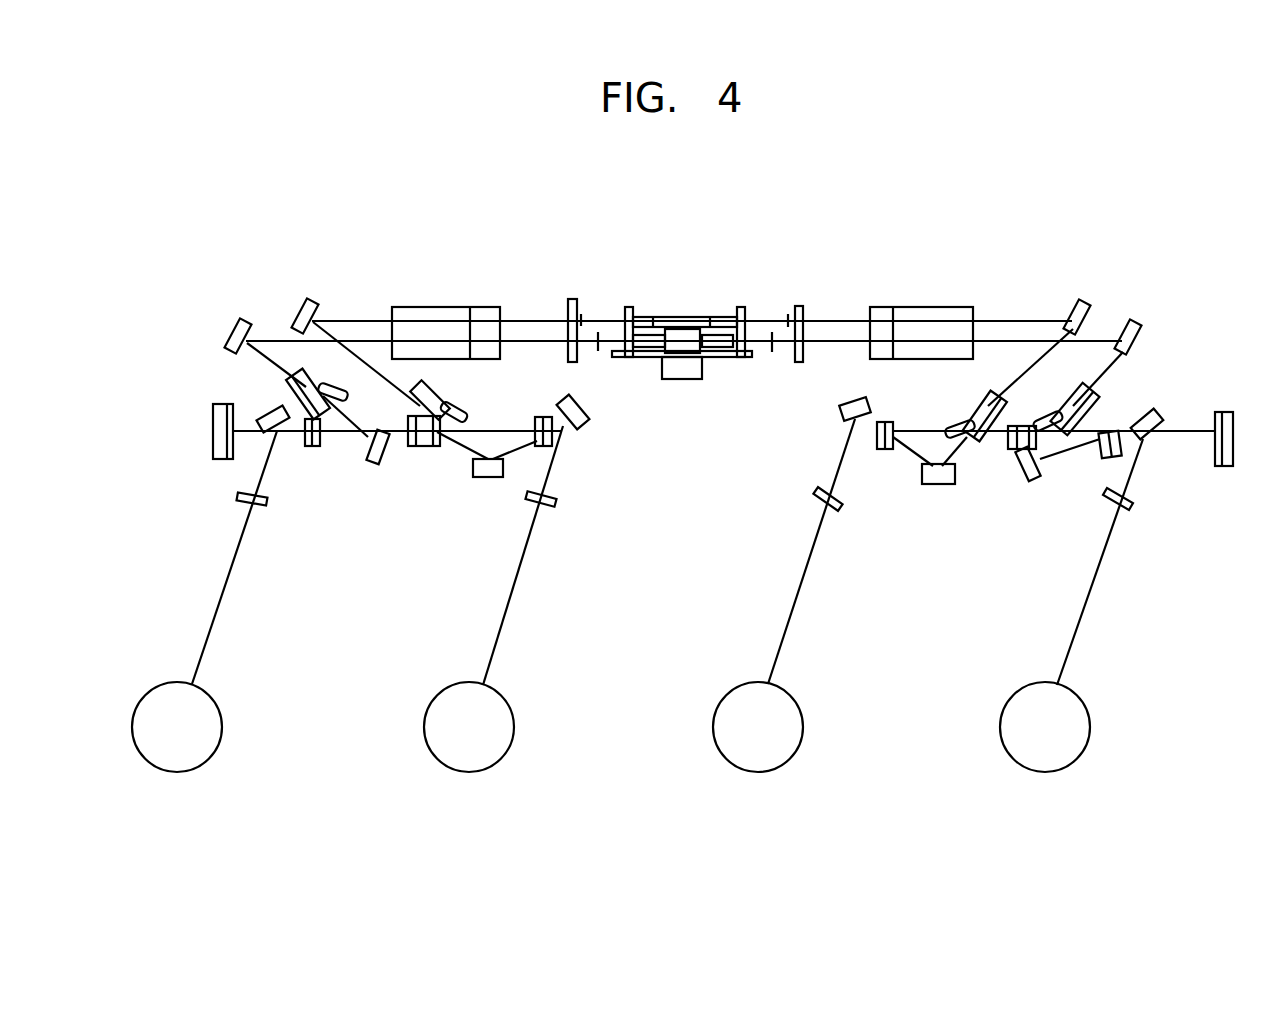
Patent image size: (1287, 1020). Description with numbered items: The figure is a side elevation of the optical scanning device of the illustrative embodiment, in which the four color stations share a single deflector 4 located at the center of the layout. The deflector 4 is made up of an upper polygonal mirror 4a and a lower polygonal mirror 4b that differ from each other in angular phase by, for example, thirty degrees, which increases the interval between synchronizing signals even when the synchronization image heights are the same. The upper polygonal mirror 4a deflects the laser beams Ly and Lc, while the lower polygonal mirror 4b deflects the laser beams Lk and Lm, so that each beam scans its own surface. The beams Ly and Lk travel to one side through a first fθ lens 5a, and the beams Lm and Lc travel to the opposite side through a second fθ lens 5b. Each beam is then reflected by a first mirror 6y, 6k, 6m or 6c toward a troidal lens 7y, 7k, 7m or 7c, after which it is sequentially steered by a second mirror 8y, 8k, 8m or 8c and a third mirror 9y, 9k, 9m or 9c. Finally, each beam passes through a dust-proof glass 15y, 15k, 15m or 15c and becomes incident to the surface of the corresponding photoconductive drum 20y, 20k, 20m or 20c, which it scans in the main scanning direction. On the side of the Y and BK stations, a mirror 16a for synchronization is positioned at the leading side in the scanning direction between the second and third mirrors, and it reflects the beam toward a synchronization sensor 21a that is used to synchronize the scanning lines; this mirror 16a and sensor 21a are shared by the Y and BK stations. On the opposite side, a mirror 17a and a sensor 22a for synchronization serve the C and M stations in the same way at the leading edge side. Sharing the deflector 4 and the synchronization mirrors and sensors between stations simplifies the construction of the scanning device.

The polygonal mirror 4 is at (678, 315).
The upper polygonal mirror 4a is at (722, 318).
The lower polygonal mirror 4b is at (716, 358).
The first fθ lens 5a is at (432, 303).
The second fθ lens 5b is at (922, 303).
The first mirror 6k is at (232, 325).
The first mirror 6y is at (300, 303).
The first mirror 6c is at (1088, 305).
The first mirror 6m is at (1140, 328).
The troidal lens 7k is at (338, 390).
The troidal lens 7y is at (445, 400).
The troidal lens 7c is at (990, 450).
The troidal lens 7m is at (1095, 407).
The second mirror 8k is at (377, 468).
The second mirror 8y is at (487, 480).
The second mirror 8c is at (938, 487).
The second mirror 8m is at (1027, 485).
The third mirror 9k is at (270, 413).
The third mirror 9y is at (588, 413).
The third mirror 9c is at (840, 410).
The third mirror 9m is at (1157, 417).
The dust-proof glass 15k is at (262, 503).
The dust-proof glass 15y is at (553, 503).
The dust-proof glass 15c is at (833, 503).
The dust-proof glass 15m is at (1127, 504).
The mirror for synchronization 16a is at (541, 418).
The mirror for synchronization 17a is at (890, 420).
The photoconductive drum 20k is at (209, 696).
The photoconductive drum 20y is at (501, 696).
The photoconductive drum 20c is at (790, 696).
The photoconductive drum 20m is at (1077, 696).
The synchronization sensor 21a is at (213, 431).
The synchronization sensor 22a is at (1236, 412).
The laser beam Lk is at (515, 340).
The laser beam Ly is at (543, 320).
The laser beam Lc is at (818, 320).
The laser beam Lm is at (847, 340).